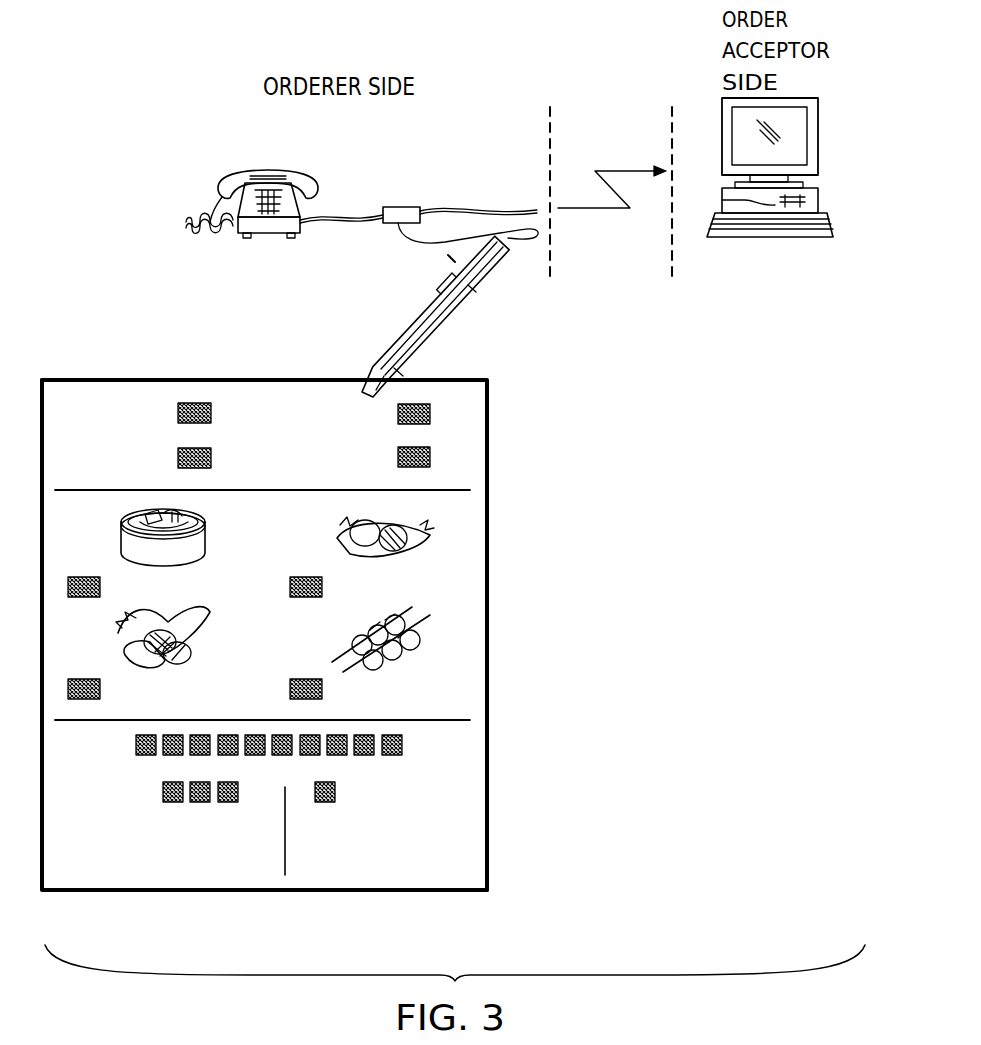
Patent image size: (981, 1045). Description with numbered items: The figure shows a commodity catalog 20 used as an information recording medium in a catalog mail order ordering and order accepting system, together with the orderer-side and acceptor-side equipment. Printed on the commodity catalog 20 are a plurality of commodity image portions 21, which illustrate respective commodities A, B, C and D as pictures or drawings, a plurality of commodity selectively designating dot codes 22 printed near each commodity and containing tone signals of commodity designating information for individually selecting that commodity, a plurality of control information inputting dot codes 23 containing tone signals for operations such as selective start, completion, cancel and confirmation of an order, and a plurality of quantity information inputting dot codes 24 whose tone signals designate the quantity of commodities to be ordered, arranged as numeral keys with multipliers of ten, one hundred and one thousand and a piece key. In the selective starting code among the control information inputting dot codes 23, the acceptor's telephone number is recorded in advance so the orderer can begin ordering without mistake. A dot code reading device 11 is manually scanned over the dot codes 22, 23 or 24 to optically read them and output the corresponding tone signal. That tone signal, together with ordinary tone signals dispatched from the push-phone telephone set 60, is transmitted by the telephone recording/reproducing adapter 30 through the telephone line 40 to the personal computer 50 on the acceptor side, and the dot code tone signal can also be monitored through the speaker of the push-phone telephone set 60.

The dot code reading device 11 is at (437, 333).
The commodity catalog 20 is at (245, 893).
The commodity image portions 21 is at (420, 612).
The commodity selectively designating dot codes 22 is at (312, 701).
The control information inputting dot codes 23 is at (503, 413).
The quantity information inputting dot codes 24 is at (137, 757).
The telephone recording/reproducing adapter 30 is at (399, 205).
The telephone line 40 is at (598, 168).
The personal computer 50 is at (820, 128).
The push-phone telephone set 60 is at (256, 168).